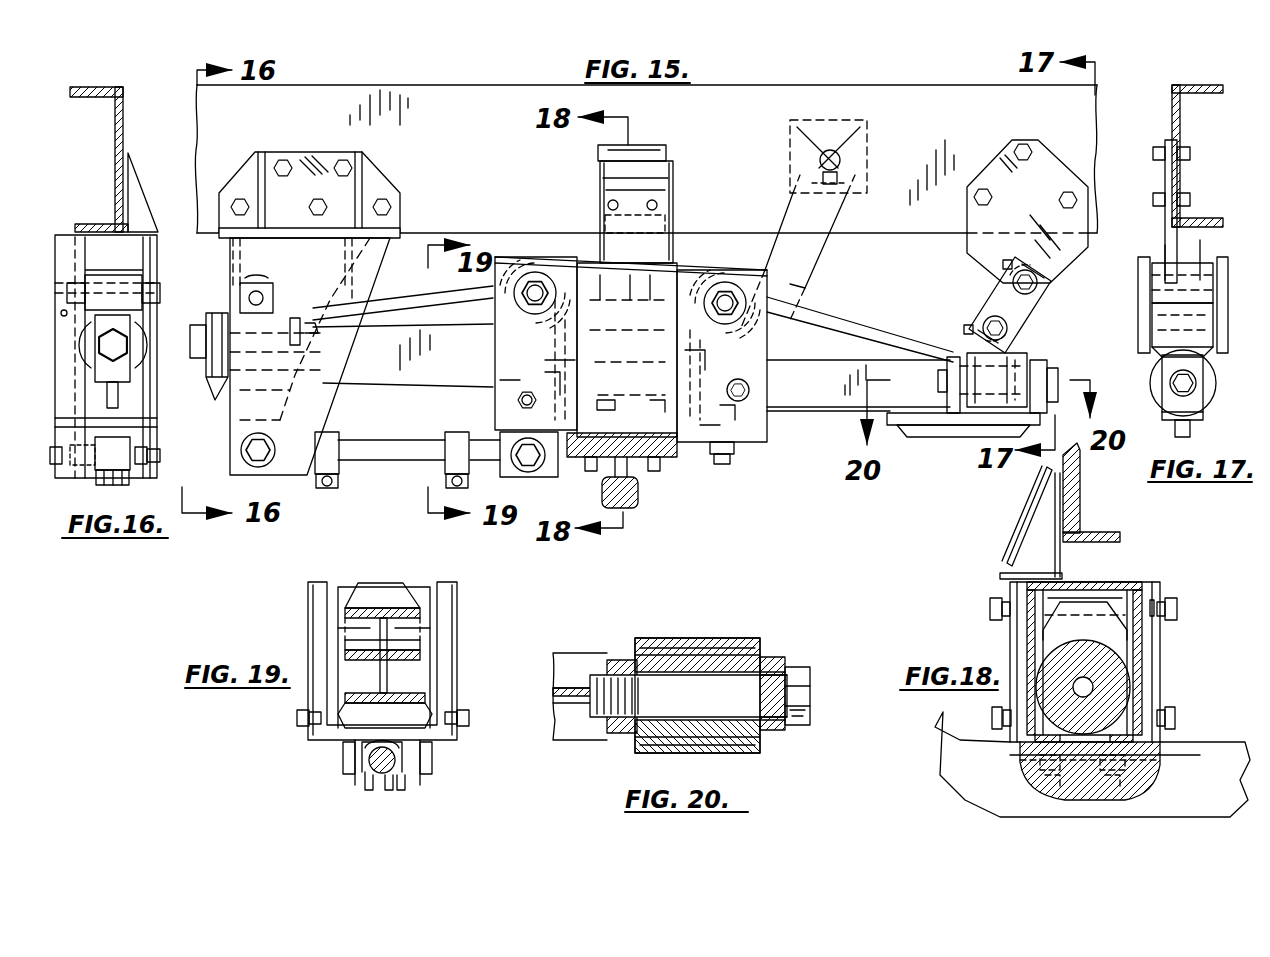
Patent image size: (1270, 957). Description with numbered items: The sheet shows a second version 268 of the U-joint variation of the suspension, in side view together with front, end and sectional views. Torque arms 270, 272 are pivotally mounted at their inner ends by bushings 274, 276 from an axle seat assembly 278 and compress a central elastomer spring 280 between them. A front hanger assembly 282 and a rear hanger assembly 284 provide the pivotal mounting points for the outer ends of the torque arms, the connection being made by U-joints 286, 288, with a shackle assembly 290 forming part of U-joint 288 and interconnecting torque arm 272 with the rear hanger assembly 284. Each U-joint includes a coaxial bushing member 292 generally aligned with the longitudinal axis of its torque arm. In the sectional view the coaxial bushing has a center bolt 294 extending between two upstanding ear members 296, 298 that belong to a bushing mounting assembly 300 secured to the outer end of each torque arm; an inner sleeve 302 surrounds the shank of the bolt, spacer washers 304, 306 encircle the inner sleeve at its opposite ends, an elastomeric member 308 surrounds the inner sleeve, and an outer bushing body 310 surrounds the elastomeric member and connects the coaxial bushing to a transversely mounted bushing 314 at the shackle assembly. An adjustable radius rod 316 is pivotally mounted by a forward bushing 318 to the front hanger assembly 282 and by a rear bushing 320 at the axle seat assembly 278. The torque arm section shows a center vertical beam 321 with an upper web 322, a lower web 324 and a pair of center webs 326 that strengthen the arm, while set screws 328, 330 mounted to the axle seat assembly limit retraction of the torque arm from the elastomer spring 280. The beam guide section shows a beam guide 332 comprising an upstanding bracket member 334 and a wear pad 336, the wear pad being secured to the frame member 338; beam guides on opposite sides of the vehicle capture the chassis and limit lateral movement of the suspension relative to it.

In FIG. 15, the second version of the U-joint variation 268 is at (775, 475).
In FIG. 15, the torque arm 270 is at (405, 390).
In FIG. 19, the torque arm 270 is at (358, 672).
In FIG. 15, the torque arm 272 is at (808, 417).
In FIG. 20, the torque arm 272 is at (585, 632).
In FIG. 15, the bushing 274 is at (548, 262).
In FIG. 18, the bushing 274 is at (1118, 592).
In FIG. 15, the bushing 276 is at (723, 266).
In FIG. 15, the axle seat assembly 278 is at (752, 452).
In FIG. 18, the axle seat assembly 278 is at (1165, 580).
In FIG. 19, the axle seat assembly 278 is at (458, 590).
In FIG. 15, the central elastomer spring 280 is at (627, 337).
In FIG. 18, the central elastomer spring 280 is at (1120, 677).
In FIG. 15, the front hanger assembly 282 is at (292, 478).
In FIG. 16, the front hanger assembly 282 is at (153, 392).
In FIG. 15, the rear hanger assembly 284 is at (1062, 266).
In FIG. 17, the rear hanger assembly 284 is at (1163, 214).
In FIG. 15, the U-joint 286 is at (232, 312).
In FIG. 16, the U-joint 286 is at (145, 312).
In FIG. 15, the U-joint 288 is at (1022, 358).
In FIG. 17, the U-joint 288 is at (1160, 352).
In FIG. 15, the shackle assembly 290 is at (997, 305).
In FIG. 17, the shackle assembly 290 is at (1210, 255).
In FIG. 15, the coaxial bushing member 292 is at (205, 322).
In FIG. 16, the coaxial bushing member 292 is at (147, 349).
In FIG. 17, the coaxial bushing member 292 is at (1215, 393).
In FIG. 20, the coaxial bushing member 292 is at (770, 745).
In FIG. 20, the center bolt 294 is at (805, 672).
In FIG. 15, the ear member 296 is at (958, 356).
In FIG. 20, the ear member 296 is at (628, 722).
In FIG. 20, the ear member 298 is at (790, 662).
In FIG. 15, the bushing mounting assembly 300 is at (950, 440).
In FIG. 17, the bushing mounting assembly 300 is at (1160, 421).
In FIG. 20, the inner sleeve 302 is at (708, 642).
In FIG. 20, the spacer washer 304 is at (633, 660).
In FIG. 20, the spacer washer 306 is at (772, 657).
In FIG. 20, the elastomeric member 308 is at (738, 638).
In FIG. 20, the outer bushing body 310 is at (666, 638).
In FIG. 15, the transversely mounted bushing 314 is at (1013, 332).
In FIG. 17, the transversely mounted bushing 314 is at (1152, 317).
In FIG. 15, the adjustable radius rod 316 is at (378, 465).
In FIG. 19, the adjustable radius rod 316 is at (367, 785).
In FIG. 15, the forward bushing 318 is at (248, 472).
In FIG. 16, the forward bushing 318 is at (120, 462).
In FIG. 15, the rear bushing 320 is at (535, 479).
In FIG. 18, the rear bushing 320 is at (1135, 793).
In FIG. 19, the rear bushing 320 is at (405, 773).
In FIG. 19, the center vertical beam 321 is at (392, 680).
In FIG. 19, the upper web 322 is at (388, 588).
In FIG. 19, the lower web 324 is at (408, 720).
In FIG. 19, the center web 326 is at (345, 645).
In FIG. 18, the set screw 328 is at (1178, 726).
In FIG. 19, the set screw 328 is at (298, 718).
In FIG. 18, the set screw 330 is at (990, 714).
In FIG. 19, the set screw 330 is at (468, 718).
In FIG. 15, the beam guide 332 is at (684, 170).
In FIG. 18, the beam guide 332 is at (1016, 517).
In FIG. 15, the upstanding bracket member 334 is at (664, 192).
In FIG. 18, the upstanding bracket member 334 is at (1006, 545).
In FIG. 15, the wear pad 336 is at (655, 145).
In FIG. 18, the wear pad 336 is at (1082, 480).
In FIG. 15, the frame member 338 is at (496, 88).
In FIG. 16, the frame member 338 is at (118, 140).
In FIG. 18, the frame member 338 is at (1122, 538).